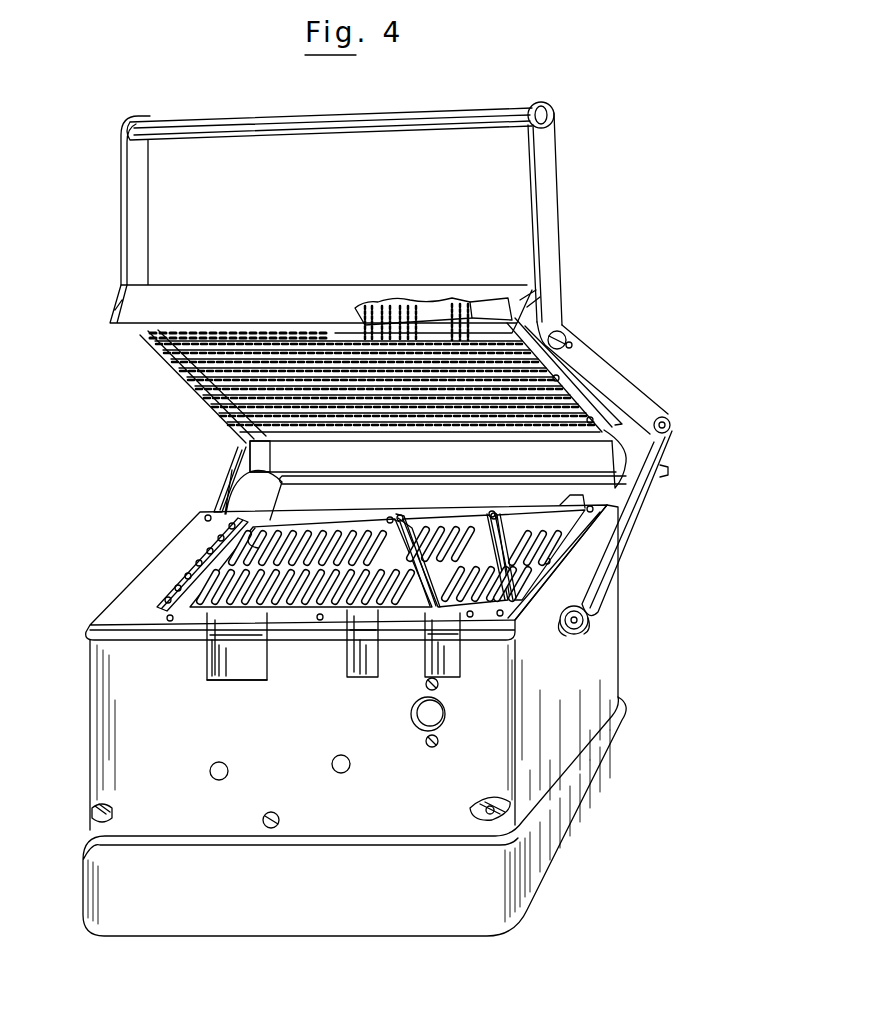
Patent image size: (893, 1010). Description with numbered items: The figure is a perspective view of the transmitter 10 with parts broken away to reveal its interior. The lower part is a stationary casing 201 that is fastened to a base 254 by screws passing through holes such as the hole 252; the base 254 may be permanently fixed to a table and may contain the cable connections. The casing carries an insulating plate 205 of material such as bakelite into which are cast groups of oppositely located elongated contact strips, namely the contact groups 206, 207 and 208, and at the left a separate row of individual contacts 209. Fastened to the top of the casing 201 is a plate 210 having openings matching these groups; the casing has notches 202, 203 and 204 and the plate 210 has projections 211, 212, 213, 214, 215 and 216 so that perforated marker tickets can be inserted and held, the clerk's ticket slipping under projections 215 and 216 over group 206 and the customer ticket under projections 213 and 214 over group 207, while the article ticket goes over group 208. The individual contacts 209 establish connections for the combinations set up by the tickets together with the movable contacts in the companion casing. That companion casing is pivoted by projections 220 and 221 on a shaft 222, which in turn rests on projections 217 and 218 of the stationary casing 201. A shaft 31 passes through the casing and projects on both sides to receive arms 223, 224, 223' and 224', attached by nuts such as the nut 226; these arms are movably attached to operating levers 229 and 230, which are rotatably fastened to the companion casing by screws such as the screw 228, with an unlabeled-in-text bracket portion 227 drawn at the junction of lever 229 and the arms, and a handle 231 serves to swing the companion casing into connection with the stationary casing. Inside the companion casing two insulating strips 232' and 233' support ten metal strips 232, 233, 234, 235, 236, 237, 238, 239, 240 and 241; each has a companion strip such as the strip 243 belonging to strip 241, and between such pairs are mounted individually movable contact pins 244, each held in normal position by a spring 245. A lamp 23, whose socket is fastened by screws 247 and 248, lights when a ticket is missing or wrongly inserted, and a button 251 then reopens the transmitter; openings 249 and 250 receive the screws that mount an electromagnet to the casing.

The transmitter 10 is at (612, 87).
The lamp 23 is at (446, 713).
The shaft 31 is at (580, 604).
The stationary casing 201 is at (604, 672).
The notch 202 is at (462, 658).
The notch 203 is at (372, 659).
The notch 204 is at (256, 664).
The insulating plate 205 is at (260, 640).
The contact group 206 is at (536, 540).
The contact group 207 is at (466, 535).
The contact group 208 is at (364, 540).
The individual contacts 209 is at (224, 536).
The plate 210 is at (110, 604).
The projection 211 is at (266, 522).
The projection 212 is at (392, 516).
The projection 213 is at (405, 525).
The projection 214 is at (494, 520).
The projection 215 is at (522, 510).
The projection 216 is at (552, 545).
The projection 217 is at (292, 478).
The projection 218 is at (596, 502).
The projection 220 is at (270, 452).
The projection 221 is at (618, 455).
The shaft 222 is at (478, 470).
The arm 223 is at (637, 523).
The arm 224 is at (645, 522).
The arm 223' is at (206, 479).
The arm 224' is at (212, 480).
The nut 226 is at (578, 638).
The arm 227 is at (606, 376).
The screw 228 is at (566, 338).
The operating lever 229 is at (552, 206).
The operating lever 230 is at (148, 208).
The handle 231 is at (418, 108).
The metal strip 232 is at (203, 390).
The insulating strip 232' is at (605, 375).
The metal strip 233 is at (359, 429).
The insulating strip 233' is at (325, 311).
The metal strip 234 is at (210, 405).
The metal strip 235 is at (202, 396).
The metal strip 236 is at (194, 387).
The metal strip 237 is at (186, 378).
The metal strip 238 is at (178, 369).
The metal strip 239 is at (170, 360).
The metal strip 240 is at (162, 351).
The metal strip 241 is at (153, 341).
The companion metal strip 243 is at (458, 306).
The contact pin 244 is at (402, 350).
The spring 245 is at (418, 320).
The screw 247 is at (440, 686).
The screw 248 is at (440, 738).
The opening 249 is at (224, 764).
The opening 250 is at (346, 759).
The button 251 is at (280, 816).
The hole 252 is at (90, 810).
The base 254 is at (586, 796).